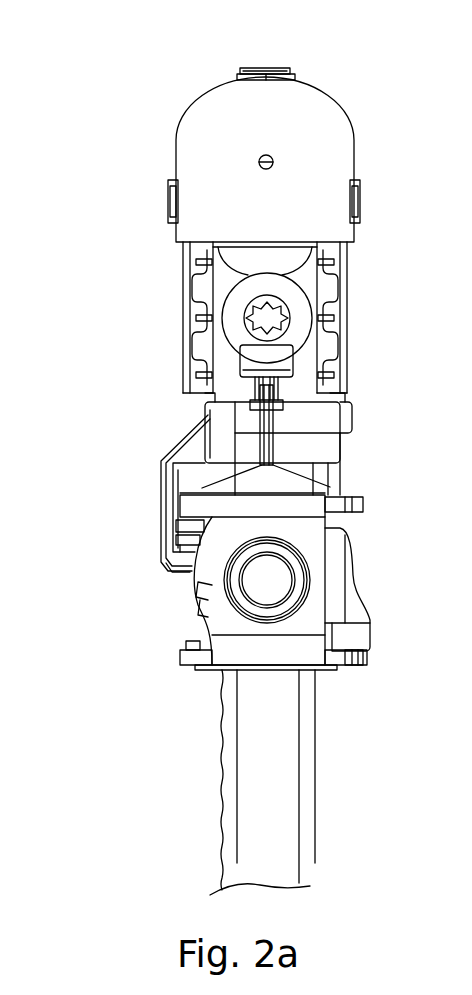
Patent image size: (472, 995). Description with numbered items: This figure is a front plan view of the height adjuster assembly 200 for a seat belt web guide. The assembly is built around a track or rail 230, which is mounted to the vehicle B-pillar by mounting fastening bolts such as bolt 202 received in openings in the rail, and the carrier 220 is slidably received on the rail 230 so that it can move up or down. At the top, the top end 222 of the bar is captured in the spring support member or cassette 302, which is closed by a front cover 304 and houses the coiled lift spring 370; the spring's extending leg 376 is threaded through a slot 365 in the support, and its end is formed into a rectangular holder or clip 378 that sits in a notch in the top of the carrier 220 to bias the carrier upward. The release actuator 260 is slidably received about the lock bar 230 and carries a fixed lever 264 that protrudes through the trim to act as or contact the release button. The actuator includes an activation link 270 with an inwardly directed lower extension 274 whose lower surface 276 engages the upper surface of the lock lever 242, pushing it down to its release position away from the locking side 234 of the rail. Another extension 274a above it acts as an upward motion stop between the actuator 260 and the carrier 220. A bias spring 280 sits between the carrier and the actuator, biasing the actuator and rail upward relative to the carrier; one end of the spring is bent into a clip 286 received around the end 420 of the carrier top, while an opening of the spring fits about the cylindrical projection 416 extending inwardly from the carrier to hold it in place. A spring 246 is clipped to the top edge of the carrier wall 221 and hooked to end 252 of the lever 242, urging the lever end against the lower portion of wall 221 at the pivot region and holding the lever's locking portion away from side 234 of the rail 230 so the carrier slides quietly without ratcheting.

The height adjuster assembly 200 is at (318, 76).
The front cover 304 is at (355, 140).
The top end of the bar 222 is at (265, 252).
The spring support member or cassette 302 is at (348, 290).
The coiled lift spring 370 is at (328, 333).
The mounting fastening bolt 202 is at (235, 293).
The fixed lever 264 is at (265, 357).
The slot 365 is at (328, 385).
The extending leg 376 is at (340, 470).
The release actuator 260 is at (176, 441).
The activation link 270 is at (175, 490).
The bias spring 280 is at (203, 488).
The end of top 420 is at (178, 500).
The cylindrical projection 416 is at (207, 512).
The wall 221 is at (353, 507).
The holder or clip 378 is at (362, 517).
The clip 286 is at (195, 522).
The extension 274a is at (175, 533).
The lower extension 274 is at (175, 548).
The lower surface 276 is at (175, 563).
The lock lever 242 is at (183, 592).
The carrier 220 is at (288, 636).
The spring 246 is at (372, 608).
The end of lever 252 is at (358, 633).
The locking portion or side of lock rail 234 is at (222, 796).
The track or rail 230 is at (316, 817).